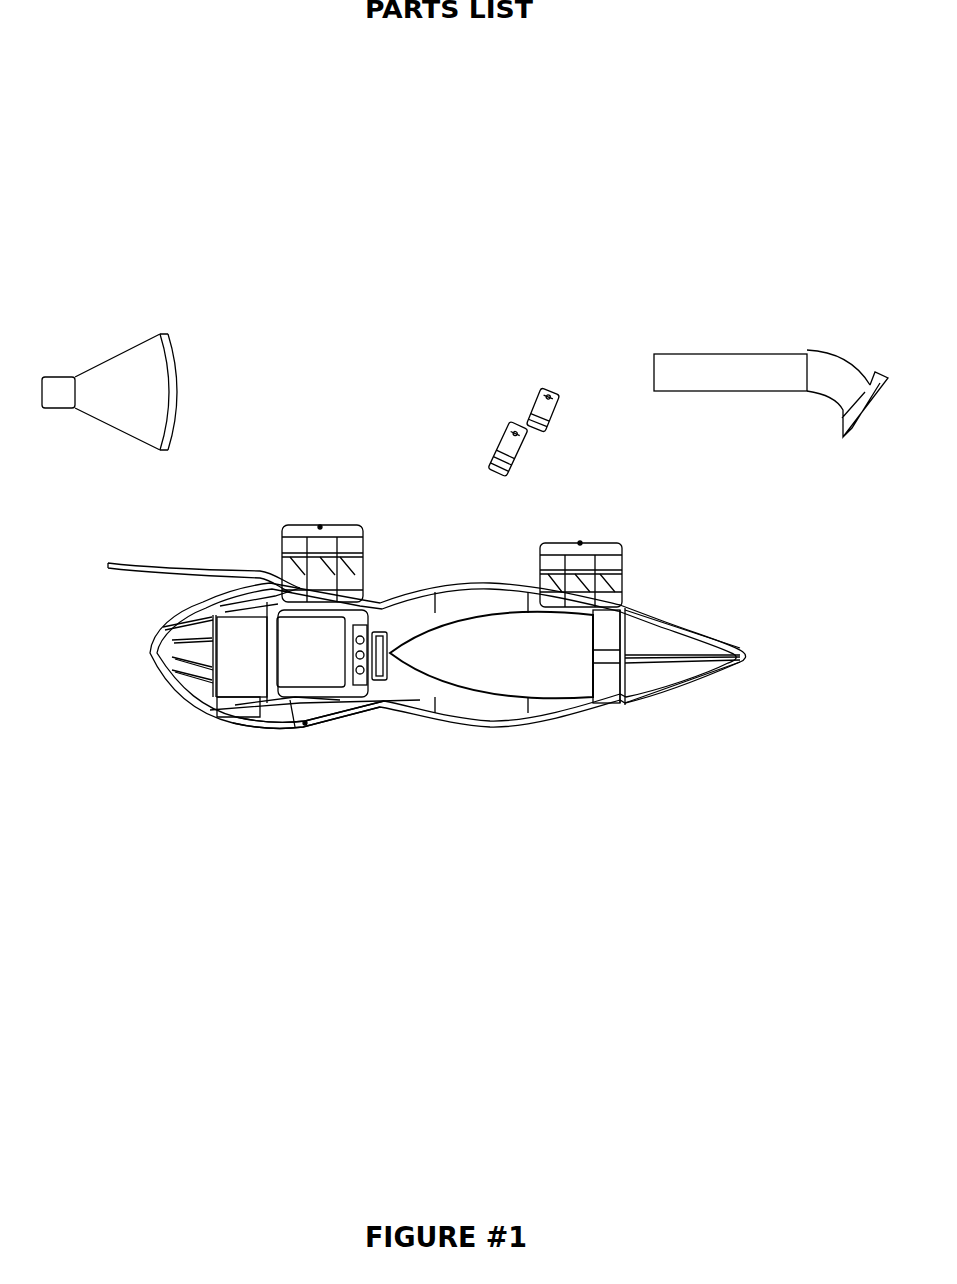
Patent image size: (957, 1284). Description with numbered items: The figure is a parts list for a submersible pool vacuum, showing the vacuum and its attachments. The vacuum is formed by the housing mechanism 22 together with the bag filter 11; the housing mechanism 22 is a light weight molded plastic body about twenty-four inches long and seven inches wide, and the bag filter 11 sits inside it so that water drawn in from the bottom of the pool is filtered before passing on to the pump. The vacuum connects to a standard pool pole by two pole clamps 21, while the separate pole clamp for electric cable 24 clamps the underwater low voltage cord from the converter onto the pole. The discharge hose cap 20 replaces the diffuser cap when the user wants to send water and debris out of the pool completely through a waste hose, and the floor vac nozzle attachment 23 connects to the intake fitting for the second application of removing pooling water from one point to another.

The bag filter 11 is at (533, 658).
The discharge hose cap 20 is at (109, 392).
The pole clamp 21 is at (580, 543).
The housing mechanism 22 is at (305, 723).
The floor vac nozzle attachment 23 is at (771, 393).
The pole clamp for electric cable 24 is at (535, 432).